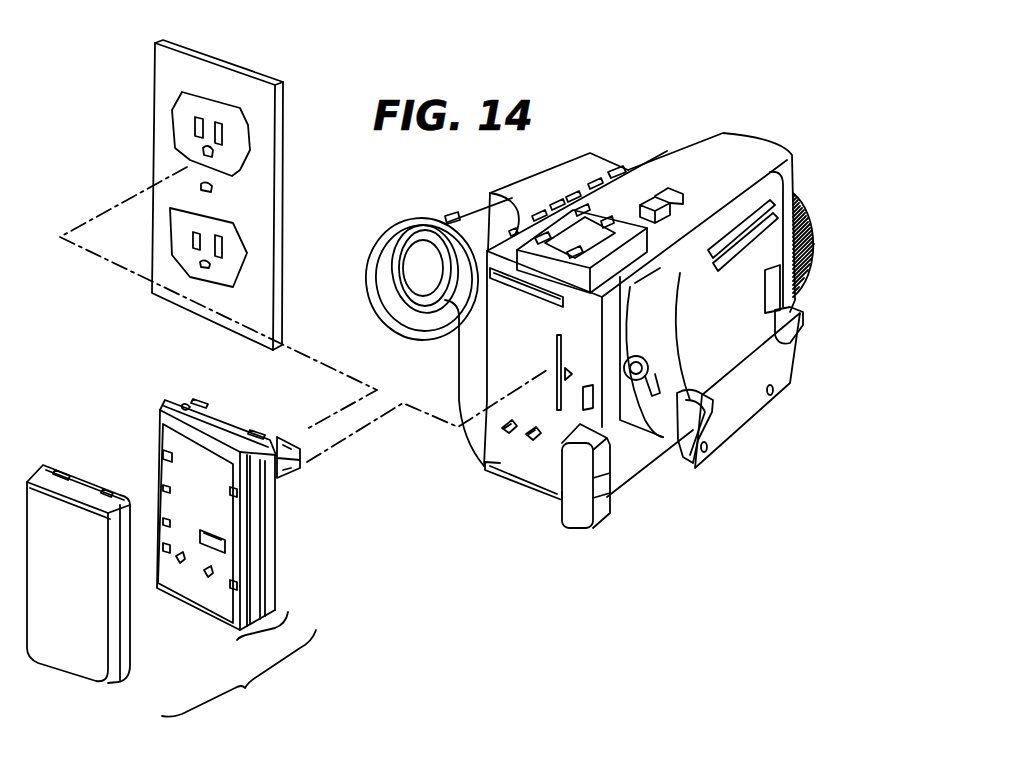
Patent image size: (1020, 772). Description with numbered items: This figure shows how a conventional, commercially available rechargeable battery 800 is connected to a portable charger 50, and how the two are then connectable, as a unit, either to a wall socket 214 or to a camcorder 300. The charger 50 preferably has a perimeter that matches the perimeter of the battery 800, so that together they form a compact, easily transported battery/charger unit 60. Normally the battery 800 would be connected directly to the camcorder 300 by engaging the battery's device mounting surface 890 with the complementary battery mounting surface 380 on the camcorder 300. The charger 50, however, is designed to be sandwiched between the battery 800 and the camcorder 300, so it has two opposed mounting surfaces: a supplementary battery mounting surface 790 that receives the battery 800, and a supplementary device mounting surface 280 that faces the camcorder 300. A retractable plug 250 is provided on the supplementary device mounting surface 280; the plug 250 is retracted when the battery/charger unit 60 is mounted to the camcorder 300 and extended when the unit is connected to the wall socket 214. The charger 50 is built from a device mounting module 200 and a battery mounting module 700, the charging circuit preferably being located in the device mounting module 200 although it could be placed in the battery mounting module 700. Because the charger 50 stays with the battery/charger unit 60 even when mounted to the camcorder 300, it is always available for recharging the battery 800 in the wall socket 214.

The wall socket 214 is at (233, 243).
The camcorder 300 is at (702, 107).
The battery mounting surface 380 is at (500, 363).
The battery mounting module 700 is at (158, 400).
The device mounting module 200 is at (223, 359).
The supplementary battery mounting surface 790 is at (183, 470).
The supplementary device mounting surface 280 is at (277, 530).
The retractable plug 250 is at (303, 452).
The charger 50 is at (293, 654).
The battery/charger unit 60 is at (239, 673).
The battery 800 is at (93, 421).
The device mounting surface 890 is at (143, 650).